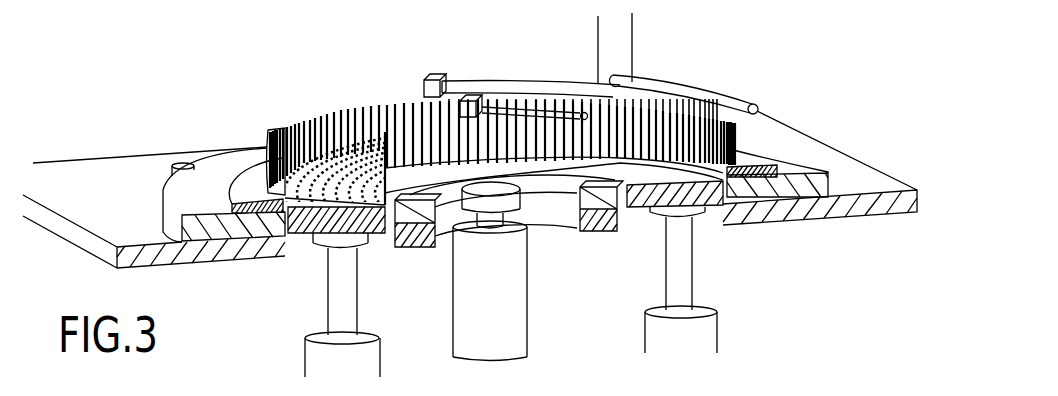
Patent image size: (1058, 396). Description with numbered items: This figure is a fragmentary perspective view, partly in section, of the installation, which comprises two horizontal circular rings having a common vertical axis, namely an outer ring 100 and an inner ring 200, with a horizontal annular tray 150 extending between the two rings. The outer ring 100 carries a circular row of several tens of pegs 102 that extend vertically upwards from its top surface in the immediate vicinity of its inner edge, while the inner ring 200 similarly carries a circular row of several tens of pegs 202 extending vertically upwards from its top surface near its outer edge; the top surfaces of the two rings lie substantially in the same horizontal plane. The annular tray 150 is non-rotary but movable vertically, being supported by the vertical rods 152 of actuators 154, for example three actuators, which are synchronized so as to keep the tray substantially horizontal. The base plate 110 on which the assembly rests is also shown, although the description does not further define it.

The outer ring 100 is at (253, 167).
The pegs 102 is at (305, 120).
The base plate 110 is at (135, 173).
The annular tray 150 is at (705, 212).
The vertical rods 152 is at (343, 263).
The actuators 154 is at (365, 357).
The inner ring 200 is at (555, 175).
The pegs 202 is at (645, 215).